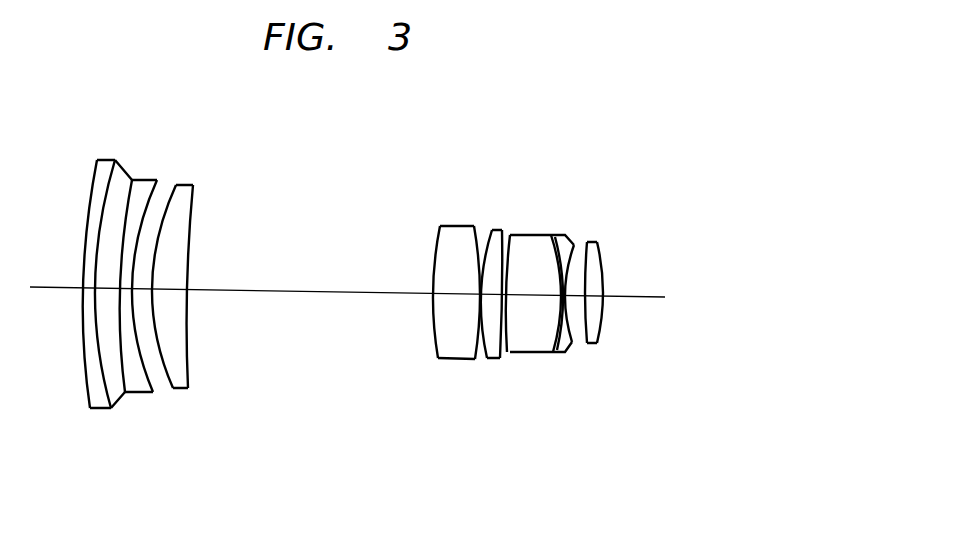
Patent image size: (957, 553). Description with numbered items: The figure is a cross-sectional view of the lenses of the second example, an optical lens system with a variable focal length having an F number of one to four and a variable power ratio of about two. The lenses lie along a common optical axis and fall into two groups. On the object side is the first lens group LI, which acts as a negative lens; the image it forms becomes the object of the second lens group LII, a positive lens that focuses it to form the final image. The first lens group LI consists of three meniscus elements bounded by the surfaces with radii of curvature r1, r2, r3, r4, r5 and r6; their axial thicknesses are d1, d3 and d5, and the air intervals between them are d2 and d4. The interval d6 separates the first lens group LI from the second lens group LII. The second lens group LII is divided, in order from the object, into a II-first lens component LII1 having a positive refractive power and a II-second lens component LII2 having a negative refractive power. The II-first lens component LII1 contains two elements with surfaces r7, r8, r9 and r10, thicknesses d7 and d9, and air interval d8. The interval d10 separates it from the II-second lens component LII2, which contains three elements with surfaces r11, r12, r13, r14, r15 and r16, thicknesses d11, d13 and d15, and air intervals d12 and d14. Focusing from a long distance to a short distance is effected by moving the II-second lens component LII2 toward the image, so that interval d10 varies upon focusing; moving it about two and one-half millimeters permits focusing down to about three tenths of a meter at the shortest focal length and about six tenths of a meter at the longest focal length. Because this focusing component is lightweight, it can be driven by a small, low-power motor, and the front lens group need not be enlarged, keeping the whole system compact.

The first lens group LI is at (197, 99).
The second lens group LII is at (598, 113).
The II-first lens component LII1 is at (498, 468).
The II-second lens component LII2 is at (592, 468).
The radius of curvature of first lens surface r1 is at (90, 178).
The radius of curvature of second lens surface r2 is at (130, 192).
The radius of curvature of third lens surface r3 is at (160, 190).
The radius of curvature of fourth lens surface r4 is at (164, 192).
The radius of curvature of fifth lens surface r5 is at (176, 192).
The radius of curvature of sixth lens surface r6 is at (198, 195).
The radius of curvature of seventh lens surface r7 is at (437, 240).
The radius of curvature of eighth lens surface r8 is at (462, 226).
The radius of curvature of ninth lens surface r9 is at (484, 237).
The radius of curvature of tenth lens surface r10 is at (497, 232).
The radius of curvature of eleventh lens surface r11 is at (507, 235).
The radius of curvature of twelfth lens surface r12 is at (525, 234).
The radius of curvature of thirteenth lens surface r13 is at (547, 234).
The radius of curvature of fourteenth lens surface r14 is at (575, 247).
The radius of curvature of fifteenth lens surface r15 is at (587, 247).
The radius of curvature of sixteenth lens surface r16 is at (603, 257).
The lens thickness d1 is at (90, 289).
The lens-to-lens interval d2 is at (107, 289).
The lens thickness d3 is at (126, 289).
The lens-to-lens interval d4 is at (140, 289).
The lens thickness d5 is at (168, 289).
The lens-to-lens interval d6 is at (334, 293).
The lens thickness d7 is at (452, 294).
The lens-to-lens interval d8 is at (480, 294).
The lens thickness d9 is at (490, 294).
The lens-to-lens interval d10 is at (504, 294).
The lens thickness d11 is at (533, 295).
The lens-to-lens interval d12 is at (560, 295).
The lens thickness d13 is at (566, 295).
The lens-to-lens interval d14 is at (576, 295).
The lens thickness d15 is at (594, 296).